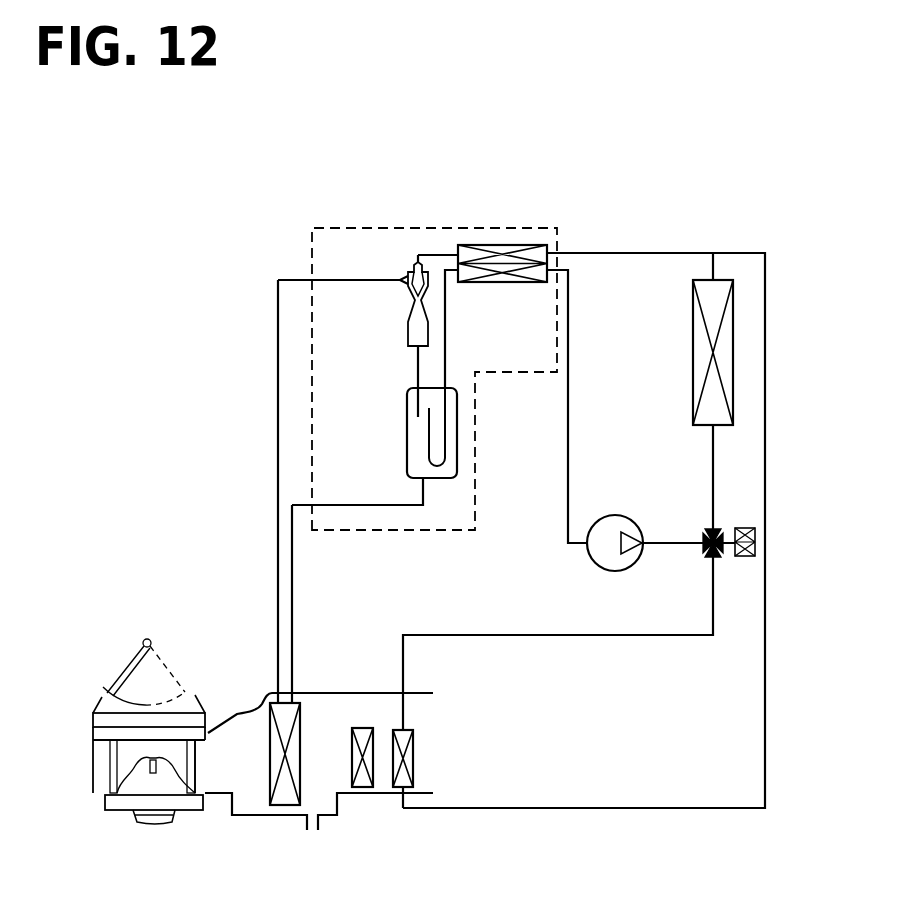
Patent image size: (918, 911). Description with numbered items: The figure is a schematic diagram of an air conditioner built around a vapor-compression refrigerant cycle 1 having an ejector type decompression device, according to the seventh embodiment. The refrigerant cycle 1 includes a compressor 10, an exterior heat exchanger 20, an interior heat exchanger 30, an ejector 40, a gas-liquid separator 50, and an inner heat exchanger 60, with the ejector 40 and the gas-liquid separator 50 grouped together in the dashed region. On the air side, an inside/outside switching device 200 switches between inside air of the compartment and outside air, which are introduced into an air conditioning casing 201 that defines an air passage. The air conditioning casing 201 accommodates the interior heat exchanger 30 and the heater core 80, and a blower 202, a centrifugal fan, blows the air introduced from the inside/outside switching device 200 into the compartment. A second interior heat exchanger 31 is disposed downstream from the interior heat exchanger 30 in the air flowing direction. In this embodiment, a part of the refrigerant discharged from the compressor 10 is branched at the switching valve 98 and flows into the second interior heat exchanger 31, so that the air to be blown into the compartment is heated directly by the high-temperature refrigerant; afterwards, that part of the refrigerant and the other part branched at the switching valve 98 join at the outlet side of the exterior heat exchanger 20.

The refrigerant cycle 1 is at (710, 196).
The compressor 10 is at (630, 518).
The exterior heat exchanger 20 is at (693, 352).
The interior heat exchanger 30 is at (271, 768).
The second interior heat exchanger 31 is at (414, 752).
The ejector 40 is at (413, 300).
The gas-liquid separator 50 is at (457, 432).
The inner heat exchanger 60 is at (497, 245).
The heater core 80 is at (351, 763).
The switching valve 98 is at (706, 545).
The inside/outside switching device 200 is at (110, 693).
The air conditioning casing 201 is at (345, 693).
The blower 202 is at (103, 762).